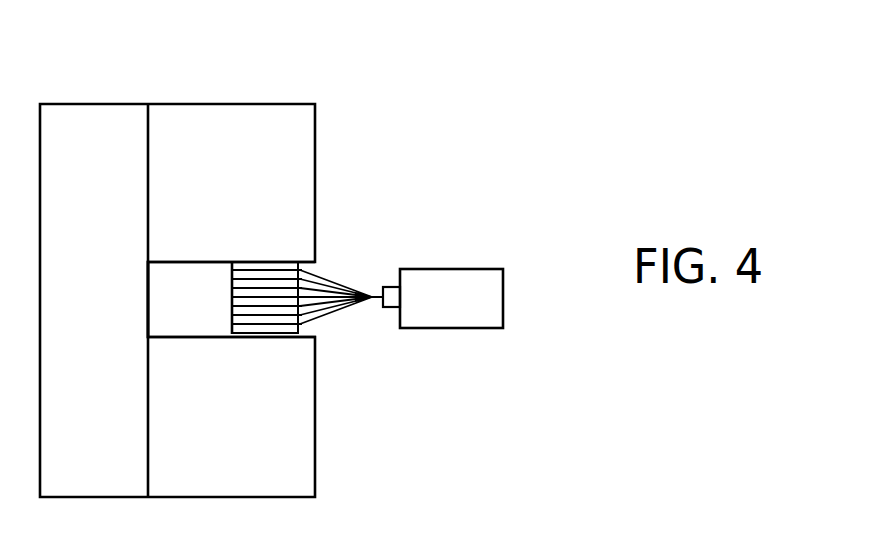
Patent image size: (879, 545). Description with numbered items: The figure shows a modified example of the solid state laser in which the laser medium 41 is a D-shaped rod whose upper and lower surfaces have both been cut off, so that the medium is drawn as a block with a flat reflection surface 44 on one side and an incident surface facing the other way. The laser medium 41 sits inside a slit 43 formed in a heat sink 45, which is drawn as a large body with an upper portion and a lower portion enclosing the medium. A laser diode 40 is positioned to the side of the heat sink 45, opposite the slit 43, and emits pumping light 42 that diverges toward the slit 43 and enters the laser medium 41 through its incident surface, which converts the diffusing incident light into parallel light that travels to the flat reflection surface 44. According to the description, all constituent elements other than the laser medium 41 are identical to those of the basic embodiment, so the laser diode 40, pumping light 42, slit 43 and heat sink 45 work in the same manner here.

The laser diode (LD) 40 is at (441, 328).
The laser medium 41 is at (257, 283).
The pumping light 42 is at (337, 277).
The slit 43 is at (317, 272).
The reflection surface 44 is at (236, 298).
The heat sink 45 is at (257, 125).